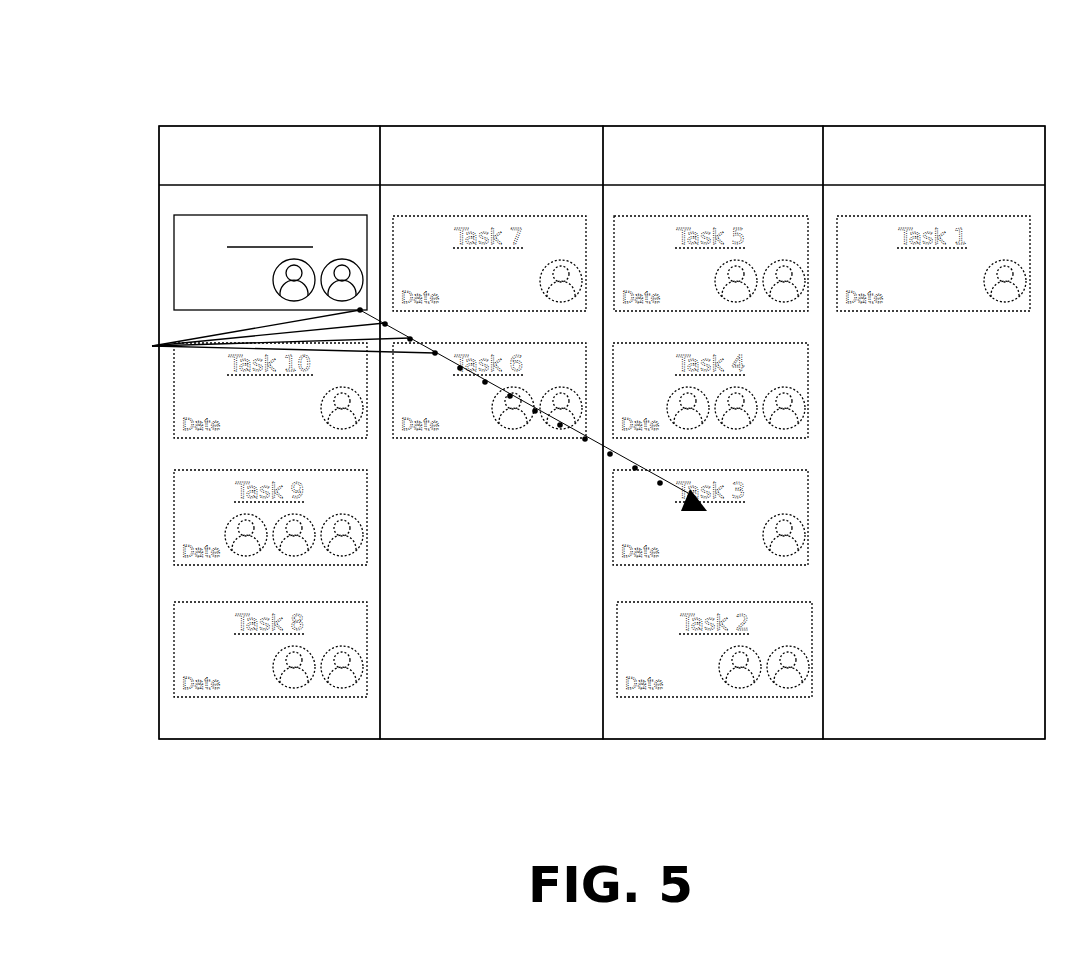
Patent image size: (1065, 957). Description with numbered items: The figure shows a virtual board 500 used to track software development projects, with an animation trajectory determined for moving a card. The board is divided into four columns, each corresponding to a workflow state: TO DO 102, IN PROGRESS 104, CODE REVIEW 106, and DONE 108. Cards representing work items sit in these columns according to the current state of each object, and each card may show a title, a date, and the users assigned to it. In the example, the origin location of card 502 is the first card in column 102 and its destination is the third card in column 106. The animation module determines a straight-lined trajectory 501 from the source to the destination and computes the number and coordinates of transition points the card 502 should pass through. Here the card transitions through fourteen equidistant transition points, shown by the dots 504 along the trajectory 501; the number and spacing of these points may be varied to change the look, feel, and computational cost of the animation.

The task board user interface 500 is at (242, 76).
The TO DO column 102 is at (330, 168).
The IN PROGRESS column 104 is at (585, 168).
The CODE REVIEW column 106 is at (804, 168).
The DONE column 108 is at (987, 168).
The card 502 is at (166, 248).
The dots 504 is at (152, 347).
The trajectory 501 is at (455, 366).